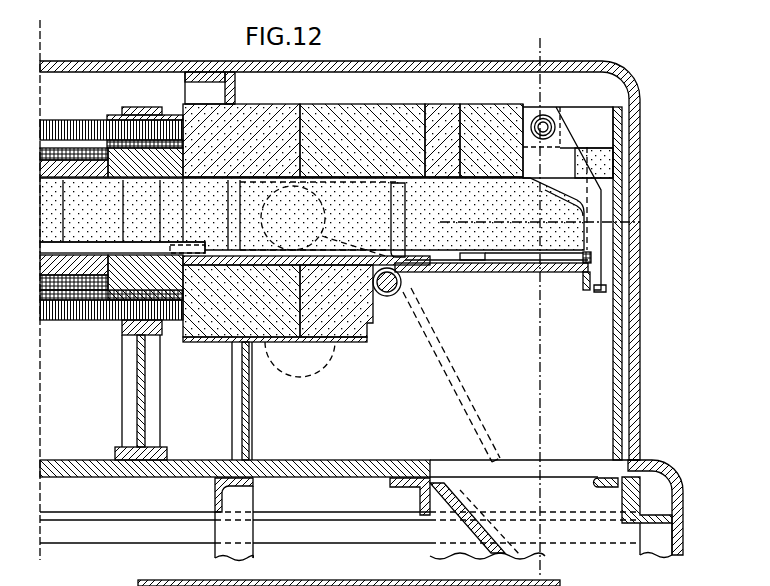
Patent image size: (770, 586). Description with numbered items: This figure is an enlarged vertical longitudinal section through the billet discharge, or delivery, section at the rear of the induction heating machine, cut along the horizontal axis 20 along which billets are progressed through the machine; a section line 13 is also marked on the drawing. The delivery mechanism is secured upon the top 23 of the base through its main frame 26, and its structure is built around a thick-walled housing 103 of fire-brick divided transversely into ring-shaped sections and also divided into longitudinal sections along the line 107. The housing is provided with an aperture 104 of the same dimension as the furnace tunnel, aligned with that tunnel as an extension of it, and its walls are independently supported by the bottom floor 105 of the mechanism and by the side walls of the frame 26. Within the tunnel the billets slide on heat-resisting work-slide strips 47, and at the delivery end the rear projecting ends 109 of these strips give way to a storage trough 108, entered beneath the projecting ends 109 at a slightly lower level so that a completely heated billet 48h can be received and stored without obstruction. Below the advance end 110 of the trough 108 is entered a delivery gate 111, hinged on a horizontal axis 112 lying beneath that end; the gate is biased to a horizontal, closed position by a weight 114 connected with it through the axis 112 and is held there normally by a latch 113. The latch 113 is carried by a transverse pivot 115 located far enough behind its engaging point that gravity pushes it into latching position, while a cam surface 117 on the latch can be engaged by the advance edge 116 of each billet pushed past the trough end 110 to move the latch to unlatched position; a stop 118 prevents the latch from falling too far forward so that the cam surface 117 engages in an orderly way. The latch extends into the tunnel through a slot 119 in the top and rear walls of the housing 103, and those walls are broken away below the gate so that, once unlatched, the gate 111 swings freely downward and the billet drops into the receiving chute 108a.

The horizontal axis 20 is at (620, 215).
The main frame 26 is at (250, 430).
The top 23 is at (362, 452).
The section line 13 is at (557, 51).
The housing 103 is at (250, 135).
The longitudinal division line 107 is at (420, 105).
The aperture 104 is at (462, 165).
The heated billet 48h is at (348, 185).
The work-slide strips 47 is at (141, 243).
The projecting ends 109 is at (200, 245).
The weight 114 is at (313, 374).
The bottom floor 105 is at (352, 342).
The horizontal axis 112 is at (387, 297).
The storage trough 108 is at (430, 263).
The advance end 110 is at (474, 270).
The transverse pivot 115 is at (542, 115).
The slot 119 is at (618, 150).
The cam surface 117 is at (565, 195).
The advance edge 116 is at (598, 190).
The stop 118 is at (591, 257).
The delivery gate 111 is at (568, 276).
The latch 113 is at (597, 284).
The receiving chute 108a is at (452, 506).